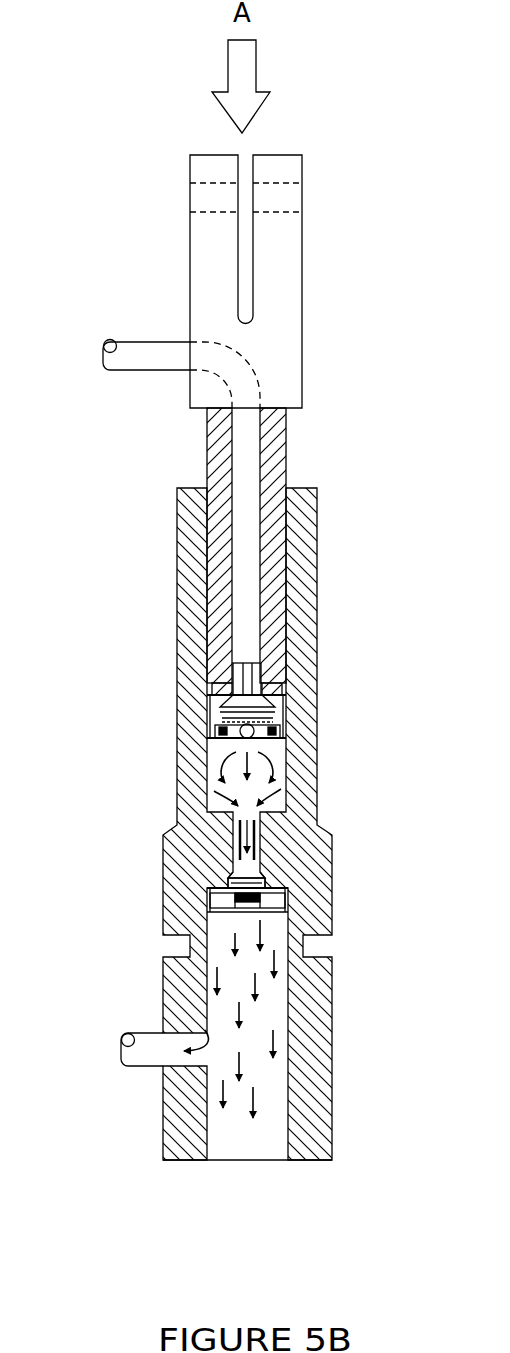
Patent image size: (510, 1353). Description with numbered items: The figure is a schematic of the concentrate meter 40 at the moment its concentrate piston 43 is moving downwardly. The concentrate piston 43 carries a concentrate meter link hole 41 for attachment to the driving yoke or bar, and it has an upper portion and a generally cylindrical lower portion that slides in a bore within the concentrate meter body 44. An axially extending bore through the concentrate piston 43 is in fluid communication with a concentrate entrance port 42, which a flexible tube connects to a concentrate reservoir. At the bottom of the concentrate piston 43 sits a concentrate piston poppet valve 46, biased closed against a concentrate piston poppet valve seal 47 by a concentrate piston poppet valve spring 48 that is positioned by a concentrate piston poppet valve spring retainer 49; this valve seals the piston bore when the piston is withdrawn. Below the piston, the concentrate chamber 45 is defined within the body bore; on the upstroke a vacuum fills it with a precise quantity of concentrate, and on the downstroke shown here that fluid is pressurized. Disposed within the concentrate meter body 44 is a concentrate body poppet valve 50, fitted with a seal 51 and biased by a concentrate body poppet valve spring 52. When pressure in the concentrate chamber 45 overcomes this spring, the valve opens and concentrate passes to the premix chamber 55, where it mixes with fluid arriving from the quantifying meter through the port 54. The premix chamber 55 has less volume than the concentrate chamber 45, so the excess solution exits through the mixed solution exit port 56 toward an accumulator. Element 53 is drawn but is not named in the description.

The concentrate meter 40 is at (157, 728).
The concentrate meter link hole 41 is at (275, 183).
The concentrate entrance port 42 is at (164, 373).
The concentrate piston 43 is at (292, 338).
The concentrate meter body 44 is at (317, 560).
The concentrate chamber 45 is at (270, 775).
The concentrate piston poppet valve 46 is at (258, 677).
The concentrate piston poppet valve seal 47 is at (266, 698).
The concentrate piston poppet valve spring 48 is at (278, 716).
The concentrate piston poppet valve spring retainer 49 is at (275, 731).
The concentrate body poppet valve 50 is at (262, 852).
The seal 51 is at (268, 876).
The concentrate body poppet valve spring 52 is at (272, 887).
The seal cap 53 is at (292, 912).
The port 54 is at (245, 1155).
The premix chamber 55 is at (272, 1000).
The mixed solution exit port 56 is at (122, 1050).